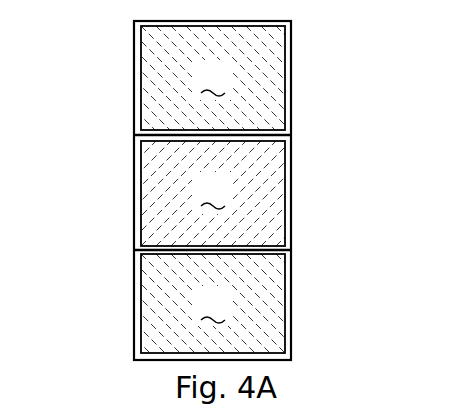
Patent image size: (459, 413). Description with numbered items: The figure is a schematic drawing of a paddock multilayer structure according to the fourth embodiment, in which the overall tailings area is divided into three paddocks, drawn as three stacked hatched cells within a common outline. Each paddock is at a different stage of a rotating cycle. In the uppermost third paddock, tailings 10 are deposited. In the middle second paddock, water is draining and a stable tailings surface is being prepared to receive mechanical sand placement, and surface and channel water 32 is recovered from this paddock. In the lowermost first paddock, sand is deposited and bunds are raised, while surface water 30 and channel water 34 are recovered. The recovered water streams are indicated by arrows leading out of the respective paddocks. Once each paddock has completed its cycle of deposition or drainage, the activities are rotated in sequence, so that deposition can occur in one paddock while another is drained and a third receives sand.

The tailings 10 is at (149, 81).
The surface water 30 is at (270, 80).
The surface and channel water 32 is at (270, 191).
The channel water 34 is at (270, 302).